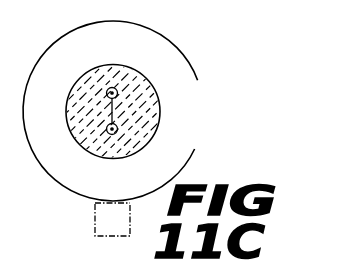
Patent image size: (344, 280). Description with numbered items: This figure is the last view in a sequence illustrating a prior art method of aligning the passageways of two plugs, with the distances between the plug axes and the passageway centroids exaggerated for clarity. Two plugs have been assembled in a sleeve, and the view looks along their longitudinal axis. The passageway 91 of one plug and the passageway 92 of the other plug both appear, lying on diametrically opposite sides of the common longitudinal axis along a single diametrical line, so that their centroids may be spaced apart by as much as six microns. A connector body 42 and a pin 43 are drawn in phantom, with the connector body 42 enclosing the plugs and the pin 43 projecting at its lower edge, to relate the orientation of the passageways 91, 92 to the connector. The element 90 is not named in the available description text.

The connector body 42 is at (163, 34).
The pin 43 is at (103, 216).
The connecting element 90 is at (139, 117).
The passageway 91 is at (106, 130).
The passageway 92 is at (106, 95).